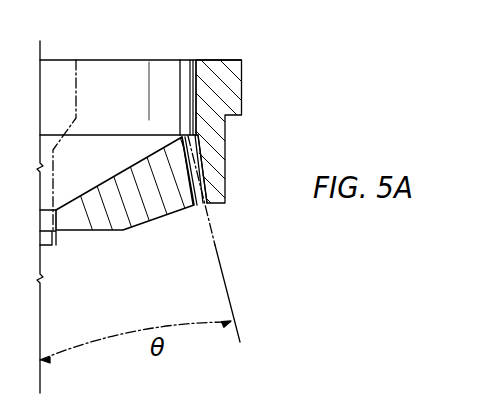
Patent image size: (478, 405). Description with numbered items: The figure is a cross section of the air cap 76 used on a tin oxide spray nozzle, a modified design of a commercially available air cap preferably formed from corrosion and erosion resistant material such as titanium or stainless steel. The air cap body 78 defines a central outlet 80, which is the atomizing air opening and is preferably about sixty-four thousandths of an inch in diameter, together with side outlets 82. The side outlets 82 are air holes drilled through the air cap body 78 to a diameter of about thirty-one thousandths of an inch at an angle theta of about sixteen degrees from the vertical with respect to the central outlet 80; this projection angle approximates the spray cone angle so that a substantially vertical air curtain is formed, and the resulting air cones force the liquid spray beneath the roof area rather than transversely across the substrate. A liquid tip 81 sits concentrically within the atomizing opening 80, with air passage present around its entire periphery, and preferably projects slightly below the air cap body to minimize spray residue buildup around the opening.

The air cap 76 is at (120, 56).
The air cap body 78 is at (229, 66).
The central outlet 80 is at (61, 198).
The liquid tip 81 is at (54, 245).
The side outlets 82 is at (204, 206).